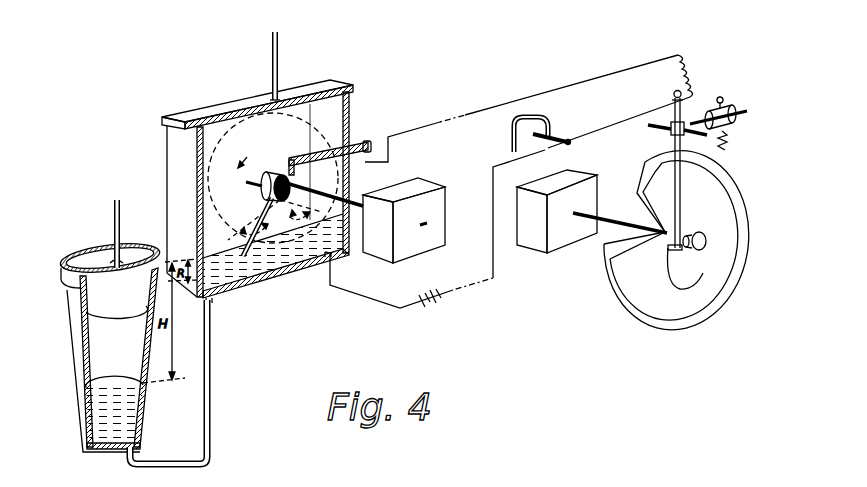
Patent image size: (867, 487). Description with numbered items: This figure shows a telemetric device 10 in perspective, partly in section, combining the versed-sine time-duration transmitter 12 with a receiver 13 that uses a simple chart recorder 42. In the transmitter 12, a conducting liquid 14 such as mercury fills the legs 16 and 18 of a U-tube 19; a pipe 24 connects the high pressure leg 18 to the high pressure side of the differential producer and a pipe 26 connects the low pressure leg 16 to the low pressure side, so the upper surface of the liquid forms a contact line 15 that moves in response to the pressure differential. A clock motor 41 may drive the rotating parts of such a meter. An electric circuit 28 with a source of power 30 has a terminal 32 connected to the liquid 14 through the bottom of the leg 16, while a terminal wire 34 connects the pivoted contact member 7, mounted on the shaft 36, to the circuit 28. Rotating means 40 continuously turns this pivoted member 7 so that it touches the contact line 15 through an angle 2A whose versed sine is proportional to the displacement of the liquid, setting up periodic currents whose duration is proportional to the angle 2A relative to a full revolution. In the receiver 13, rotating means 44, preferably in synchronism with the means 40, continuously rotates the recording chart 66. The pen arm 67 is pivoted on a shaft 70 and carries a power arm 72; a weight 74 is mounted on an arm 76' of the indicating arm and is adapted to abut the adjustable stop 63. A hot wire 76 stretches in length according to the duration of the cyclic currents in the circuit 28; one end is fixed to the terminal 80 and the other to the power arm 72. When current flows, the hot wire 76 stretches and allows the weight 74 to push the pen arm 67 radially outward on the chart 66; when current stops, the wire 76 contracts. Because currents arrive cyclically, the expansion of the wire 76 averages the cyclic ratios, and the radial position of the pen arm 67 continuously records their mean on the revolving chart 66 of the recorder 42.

The telemetric device 10 is at (455, 86).
The transmitter 12 is at (178, 165).
The receiver 13 is at (662, 142).
The conducting liquid 14 is at (307, 252).
The contact line 15 is at (240, 240).
The low pressure leg 16 is at (298, 264).
The high pressure leg 18 is at (88, 435).
The U-tube 19 is at (217, 388).
The pipe 24 is at (115, 230).
The pipe 26 is at (278, 68).
The electric circuit 28 is at (497, 103).
The source of power 30 is at (437, 302).
The terminal 32 is at (346, 293).
The terminal wire 34 is at (398, 136).
The shaft 36 is at (350, 207).
The contactor rotating means 40 is at (412, 252).
The rotating means 44 is at (558, 248).
The chart recorder 42 is at (703, 307).
The adjustable stop 63 is at (727, 127).
The recording chart 66 is at (723, 267).
The pen arm 67 is at (680, 200).
The shaft 70 is at (689, 137).
The power arm 72 is at (683, 101).
The weight 74 is at (730, 105).
The hot wire 76 is at (619, 123).
The arm 76' is at (730, 120).
The fixed terminal 80 is at (552, 137).
The pendulum 7 is at (260, 207).
The angle of contact 2A is at (266, 258).
The clock motor 41 is at (103, 400).